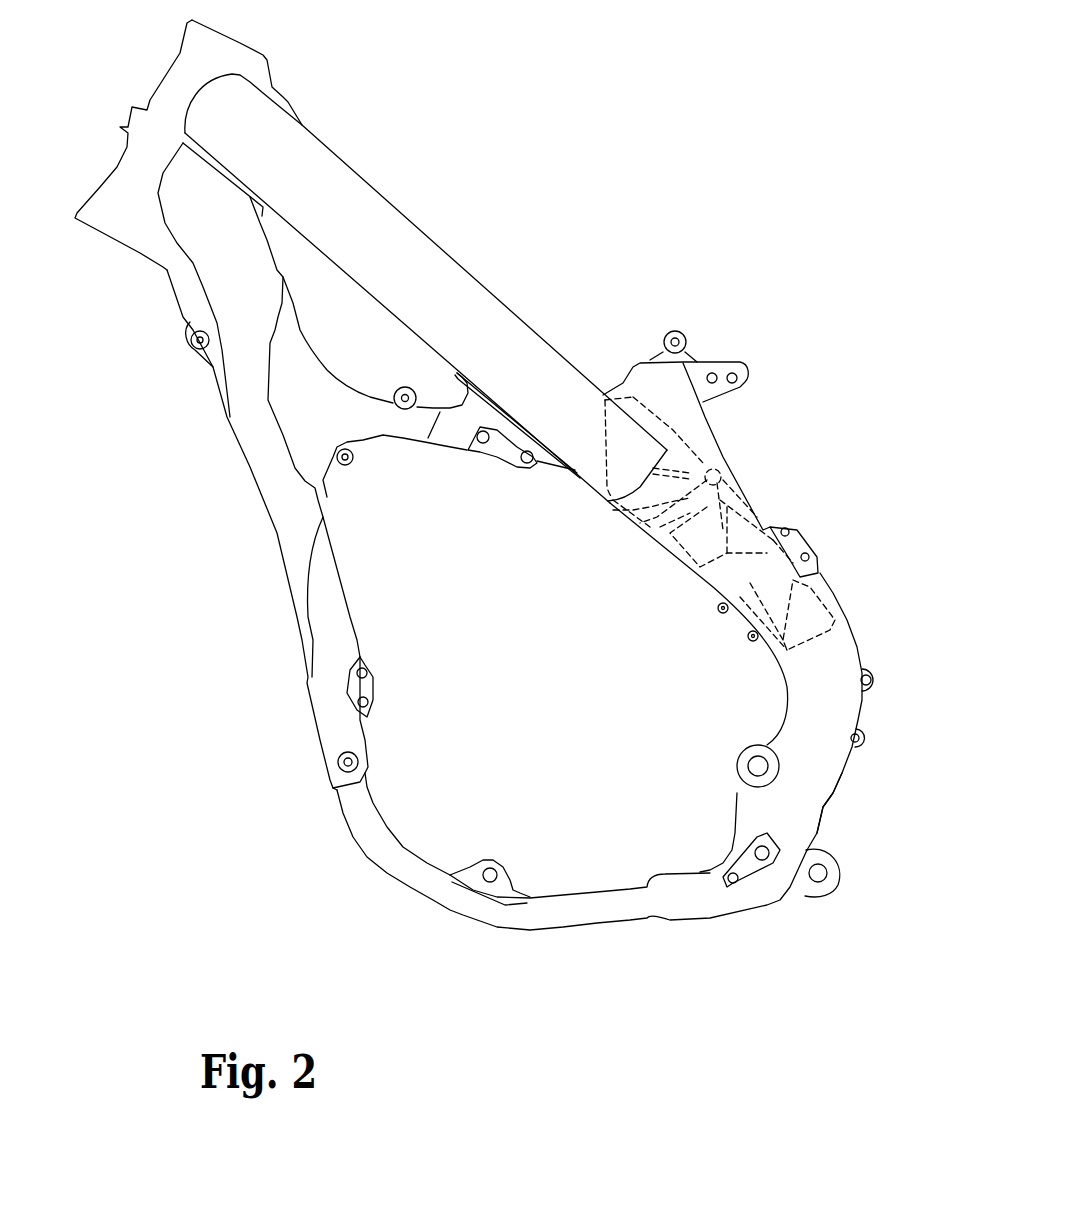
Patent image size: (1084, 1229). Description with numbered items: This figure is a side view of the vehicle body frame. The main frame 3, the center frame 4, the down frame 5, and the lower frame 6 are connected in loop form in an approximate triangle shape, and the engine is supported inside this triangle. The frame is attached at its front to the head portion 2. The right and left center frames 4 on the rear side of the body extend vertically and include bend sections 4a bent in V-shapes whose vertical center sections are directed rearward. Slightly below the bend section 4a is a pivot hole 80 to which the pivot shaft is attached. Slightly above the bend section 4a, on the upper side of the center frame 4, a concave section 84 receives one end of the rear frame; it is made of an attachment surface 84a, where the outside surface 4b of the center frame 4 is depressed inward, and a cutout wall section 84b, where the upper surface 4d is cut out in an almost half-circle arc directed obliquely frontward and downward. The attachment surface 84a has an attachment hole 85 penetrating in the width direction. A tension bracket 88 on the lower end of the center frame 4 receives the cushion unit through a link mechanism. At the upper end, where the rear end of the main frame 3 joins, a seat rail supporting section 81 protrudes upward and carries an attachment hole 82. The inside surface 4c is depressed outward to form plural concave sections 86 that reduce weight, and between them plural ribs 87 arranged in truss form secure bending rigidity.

The head pipe 2 is at (142, 133).
The main frame 3 is at (387, 220).
The center frame 4 is at (760, 503).
The bend section 4a is at (827, 673).
The outside surface 4b is at (697, 427).
The inside surface 4c is at (603, 513).
The upper surface 4d is at (712, 447).
The down frame 5 is at (290, 547).
The lower frame 6 is at (603, 903).
The pivot hole 80 is at (747, 760).
The seat rail supporting section 81 is at (660, 350).
The attachment hole 82 is at (681, 328).
The concave section 84 is at (800, 532).
The attachment surface 84a is at (818, 557).
The cutout wall section 84b is at (790, 555).
The attachment hole 85 is at (818, 573).
The concave sections 86 is at (680, 570).
The ribs 87 is at (747, 483).
The tension bracket 88 is at (813, 887).